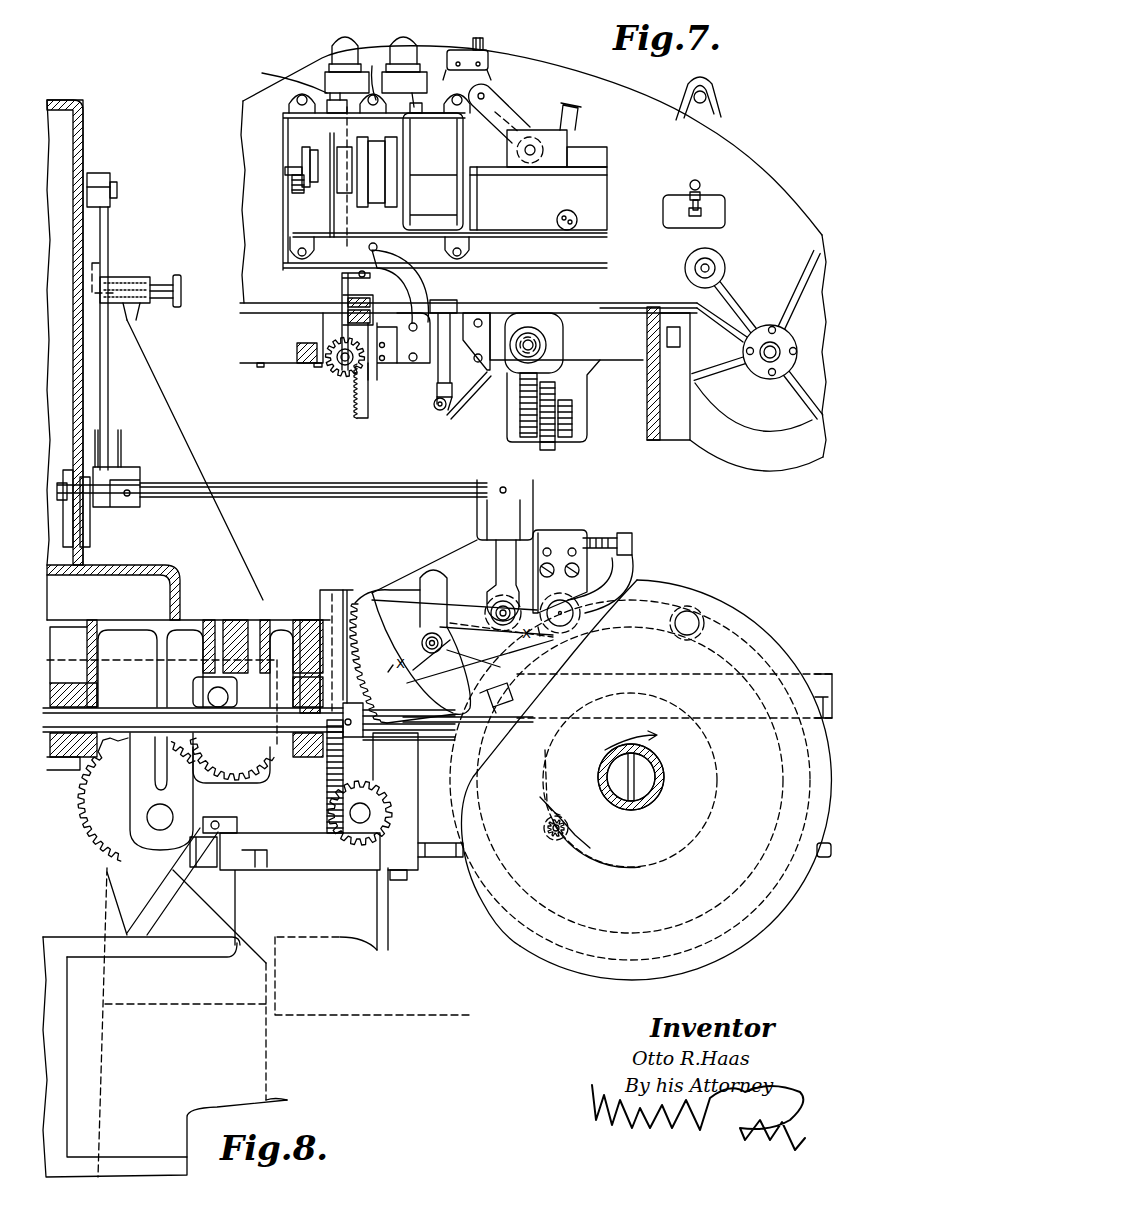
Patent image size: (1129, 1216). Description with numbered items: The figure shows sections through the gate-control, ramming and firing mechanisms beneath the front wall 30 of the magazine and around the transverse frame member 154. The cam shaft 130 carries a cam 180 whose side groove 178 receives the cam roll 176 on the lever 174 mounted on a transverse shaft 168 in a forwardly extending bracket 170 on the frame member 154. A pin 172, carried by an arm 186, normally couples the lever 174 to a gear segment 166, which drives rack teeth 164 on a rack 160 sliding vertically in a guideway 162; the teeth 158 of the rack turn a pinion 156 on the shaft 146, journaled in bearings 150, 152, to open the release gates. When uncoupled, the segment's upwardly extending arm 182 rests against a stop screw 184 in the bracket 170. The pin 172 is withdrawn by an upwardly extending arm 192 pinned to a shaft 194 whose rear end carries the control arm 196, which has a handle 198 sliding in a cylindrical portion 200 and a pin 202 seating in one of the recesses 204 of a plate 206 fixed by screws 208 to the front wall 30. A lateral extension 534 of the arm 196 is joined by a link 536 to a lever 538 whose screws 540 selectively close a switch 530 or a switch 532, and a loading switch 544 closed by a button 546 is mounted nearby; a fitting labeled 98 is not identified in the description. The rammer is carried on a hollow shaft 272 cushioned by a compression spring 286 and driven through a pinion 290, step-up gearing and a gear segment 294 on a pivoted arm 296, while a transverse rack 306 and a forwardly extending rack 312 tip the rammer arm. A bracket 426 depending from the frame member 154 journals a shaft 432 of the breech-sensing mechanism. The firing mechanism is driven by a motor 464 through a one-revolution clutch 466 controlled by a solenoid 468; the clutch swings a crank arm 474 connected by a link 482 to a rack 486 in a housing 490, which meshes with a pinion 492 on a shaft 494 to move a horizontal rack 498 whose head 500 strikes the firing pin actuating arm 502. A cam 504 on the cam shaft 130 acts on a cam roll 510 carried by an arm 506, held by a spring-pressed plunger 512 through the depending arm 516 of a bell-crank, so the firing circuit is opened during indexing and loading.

In FIG. 7, the front wall 30 is at (584, 63).
In FIG. 8, the front wall 30 is at (70, 100).
In FIG. 7, the fitting 98 is at (702, 215).
In FIG. 8, the cam shaft 130 is at (664, 777).
In FIG. 7, the shaft 146 is at (345, 356).
In FIG. 8, the shaft 146 is at (138, 713).
In FIG. 8, the bearing 150 is at (82, 765).
In FIG. 8, the bearing 152 is at (296, 765).
In FIG. 7, the transverse frame member 154 is at (632, 356).
In FIG. 8, the transverse frame member 154 is at (210, 620).
In FIG. 7, the pinion 156 is at (338, 372).
In FIG. 8, the pinion 156 is at (403, 727).
In FIG. 8, the teeth 158 is at (343, 780).
In FIG. 7, the rack 160 is at (356, 412).
In FIG. 8, the rack 160 is at (352, 593).
In FIG. 7, the guideway 162 is at (372, 378).
In FIG. 8, the guideway 162 is at (323, 592).
In FIG. 8, the rack teeth 164 is at (368, 595).
In FIG. 7, the gear segment 166 is at (361, 317).
In FIG. 8, the gear segment 166 is at (397, 615).
In FIG. 7, the shaft 168 is at (378, 297).
In FIG. 8, the shaft 168 is at (631, 570).
In FIG. 8, the bracket 170 is at (543, 530).
In FIG. 8, the pin 172 is at (422, 641).
In FIG. 7, the lever 174 is at (346, 282).
In FIG. 8, the lever 174 is at (420, 674).
In FIG. 8, the cam roll 176 is at (692, 638).
In FIG. 8, the groove 178 is at (733, 612).
In FIG. 8, the cam 180 is at (770, 627).
In FIG. 8, the arm 182 is at (633, 537).
In FIG. 8, the stop screw 184 is at (607, 537).
In FIG. 8, the arm 186 is at (488, 610).
In FIG. 7, the arm 192 is at (371, 258).
In FIG. 8, the arm 192 is at (485, 550).
In FIG. 8, the shaft 194 is at (302, 490).
In FIG. 7, the arm 196 is at (378, 246).
In FIG. 8, the arm 196 is at (109, 396).
In FIG. 8, the handle 198 is at (181, 292).
In FIG. 8, the cylindrical portion 200 is at (145, 303).
In FIG. 8, the pin 202 is at (101, 265).
In FIG. 7, the recesses 204 is at (520, 134).
In FIG. 7, the plate 206 is at (498, 120).
In FIG. 8, the plate 206 is at (99, 178).
In FIG. 7, the screws 208 is at (484, 96).
In FIG. 8, the screws 208 is at (117, 188).
In FIG. 7, the hollow shaft 272 is at (540, 330).
In FIG. 7, the compression spring 286 is at (537, 343).
In FIG. 8, the pinion 290 is at (88, 855).
In FIG. 7, the gear segment 294 is at (525, 438).
In FIG. 7, the arm 296 is at (560, 444).
In FIG. 8, the rack 306 is at (250, 600).
In FIG. 7, the rack 312 is at (302, 364).
In FIG. 7, the bracket 426 is at (457, 409).
In FIG. 7, the shaft 432 is at (435, 418).
In FIG. 7, the motor 464 is at (538, 193).
In FIG. 7, the one-revolution clutch mechanism 466 is at (440, 155).
In FIG. 7, the solenoid 468 is at (600, 148).
In FIG. 7, the crank arm 474 is at (316, 147).
In FIG. 7, the link 482 is at (327, 202).
In FIG. 8, the rack 486 is at (397, 880).
In FIG. 8, the housing 490 is at (410, 828).
In FIG. 8, the pinion 492 is at (377, 800).
In FIG. 8, the shaft 494 is at (370, 812).
In FIG. 8, the rack 498 is at (418, 862).
In FIG. 8, the head 500 is at (175, 870).
In FIG. 8, the firing pin actuating arm 502 is at (147, 893).
In FIG. 8, the cam 504 is at (653, 868).
In FIG. 8, the arm 506 is at (553, 748).
In FIG. 8, the cam roll 510 is at (553, 838).
In FIG. 8, the spring-pressed plunger 512 is at (490, 718).
In FIG. 8, the arm 516 is at (497, 707).
In FIG. 7, the switch 530 is at (327, 78).
In FIG. 7, the switch 532 is at (402, 50).
In FIG. 7, the lateral extension 534 is at (410, 210).
In FIG. 8, the lateral extension 534 is at (107, 507).
In FIG. 7, the link 536 is at (330, 222).
In FIG. 8, the link 536 is at (121, 446).
In FIG. 7, the lever 538 is at (372, 66).
In FIG. 7, the screws 540 is at (340, 88).
In FIG. 7, the loading switch 544 is at (462, 48).
In FIG. 7, the button 546 is at (484, 40).